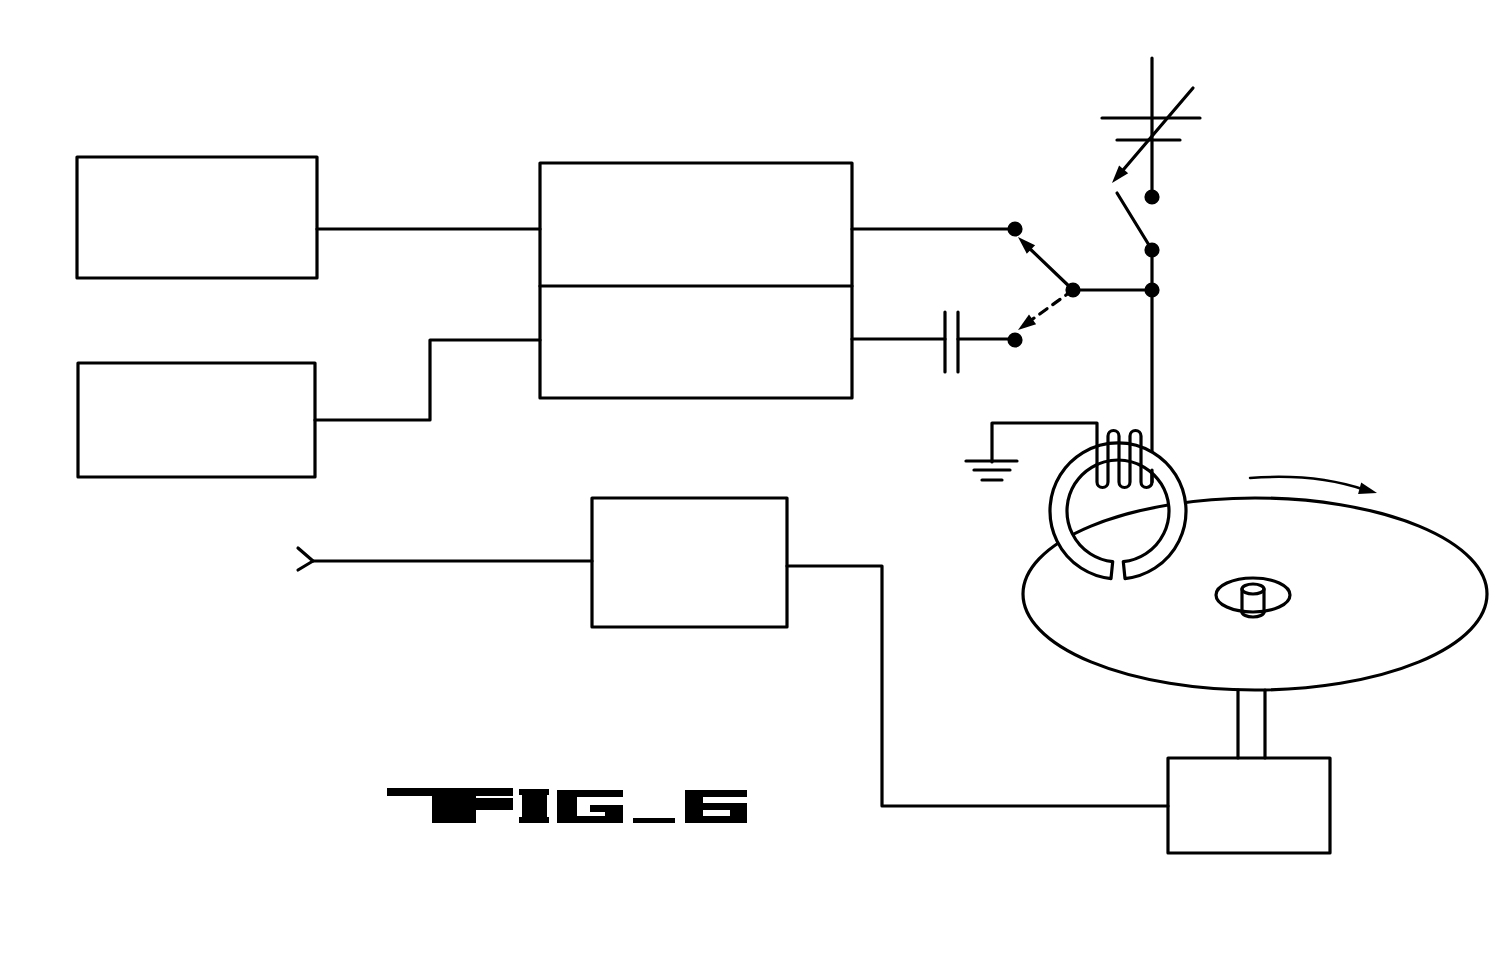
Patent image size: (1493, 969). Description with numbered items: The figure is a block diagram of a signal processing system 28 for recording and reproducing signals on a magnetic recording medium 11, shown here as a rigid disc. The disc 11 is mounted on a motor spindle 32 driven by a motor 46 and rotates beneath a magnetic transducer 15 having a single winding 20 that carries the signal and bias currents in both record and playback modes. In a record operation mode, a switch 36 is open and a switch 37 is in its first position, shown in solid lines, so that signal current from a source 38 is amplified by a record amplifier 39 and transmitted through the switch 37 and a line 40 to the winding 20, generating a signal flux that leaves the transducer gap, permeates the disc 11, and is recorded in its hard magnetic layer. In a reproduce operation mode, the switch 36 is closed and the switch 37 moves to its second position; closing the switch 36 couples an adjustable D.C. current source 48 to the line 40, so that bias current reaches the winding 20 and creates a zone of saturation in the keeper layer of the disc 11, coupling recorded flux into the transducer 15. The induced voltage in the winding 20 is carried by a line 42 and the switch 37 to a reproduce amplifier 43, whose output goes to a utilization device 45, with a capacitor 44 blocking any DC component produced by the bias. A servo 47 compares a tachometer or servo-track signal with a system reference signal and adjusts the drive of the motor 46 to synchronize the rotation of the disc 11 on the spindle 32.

The magnetic recording medium 11 is at (1397, 528).
The magnetic transducer 15 is at (1207, 462).
The winding 20 is at (1153, 432).
The signal processing system 28 is at (412, 85).
The motor spindle 32 is at (1265, 723).
The switch 36 is at (1140, 224).
The switch 37 is at (1047, 260).
The source 38 is at (207, 157).
The record amplifier 39 is at (740, 163).
The line 40 is at (1152, 327).
The line 42 is at (1105, 288).
The reproduce amplifier 43 is at (750, 393).
The capacitor 44 is at (942, 363).
The utilization device 45 is at (210, 370).
The motor 46 is at (1320, 808).
The servo 47 is at (692, 507).
The adjustable D.C. current source 48 is at (1220, 102).